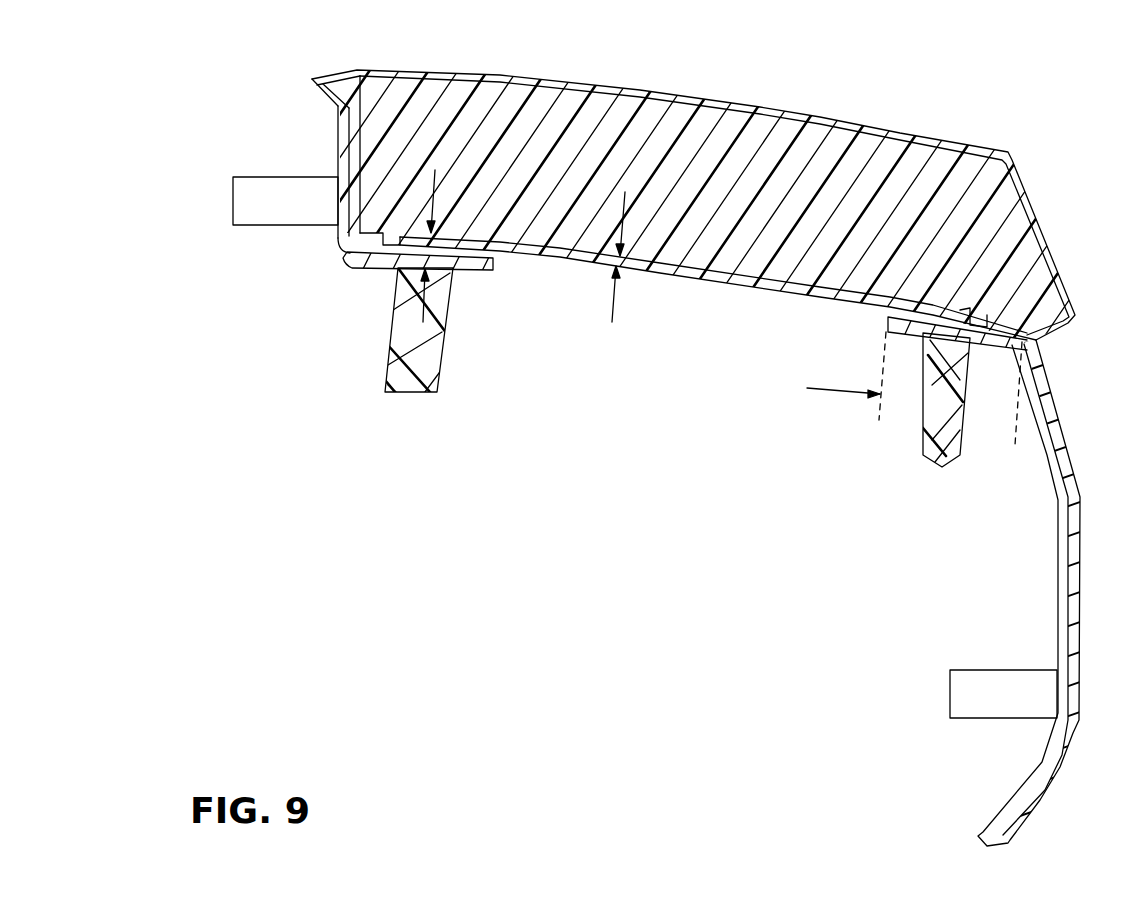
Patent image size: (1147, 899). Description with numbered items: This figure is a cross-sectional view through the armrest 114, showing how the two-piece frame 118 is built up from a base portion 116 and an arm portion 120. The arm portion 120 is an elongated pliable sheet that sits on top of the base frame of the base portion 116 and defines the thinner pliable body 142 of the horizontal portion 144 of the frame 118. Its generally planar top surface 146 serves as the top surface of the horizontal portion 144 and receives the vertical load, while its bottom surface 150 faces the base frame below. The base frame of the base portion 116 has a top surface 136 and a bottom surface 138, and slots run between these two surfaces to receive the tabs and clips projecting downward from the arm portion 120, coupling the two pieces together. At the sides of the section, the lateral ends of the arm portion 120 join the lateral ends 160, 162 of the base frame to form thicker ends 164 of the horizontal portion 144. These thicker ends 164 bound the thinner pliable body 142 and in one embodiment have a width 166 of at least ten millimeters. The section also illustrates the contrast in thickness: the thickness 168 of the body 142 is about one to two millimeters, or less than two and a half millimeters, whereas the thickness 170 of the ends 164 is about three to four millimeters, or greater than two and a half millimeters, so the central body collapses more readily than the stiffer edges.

The armrest 114 is at (990, 68).
The base portion 116 is at (335, 142).
The frame 118 is at (320, 97).
The arm portion 120 is at (387, 350).
The top surface 136 is at (343, 247).
The bottom surface 138 is at (463, 272).
The thinner pliable body 142 is at (687, 270).
The horizontal portion 144 is at (336, 237).
The top surface 146 is at (822, 150).
The bottom surface 150 is at (788, 232).
The lateral end 160 is at (482, 272).
The lateral end 162 is at (927, 337).
The thicker ends 164 is at (375, 268).
The width 166 is at (1024, 417).
The thickness 168 is at (613, 298).
The thickness 170 is at (433, 318).